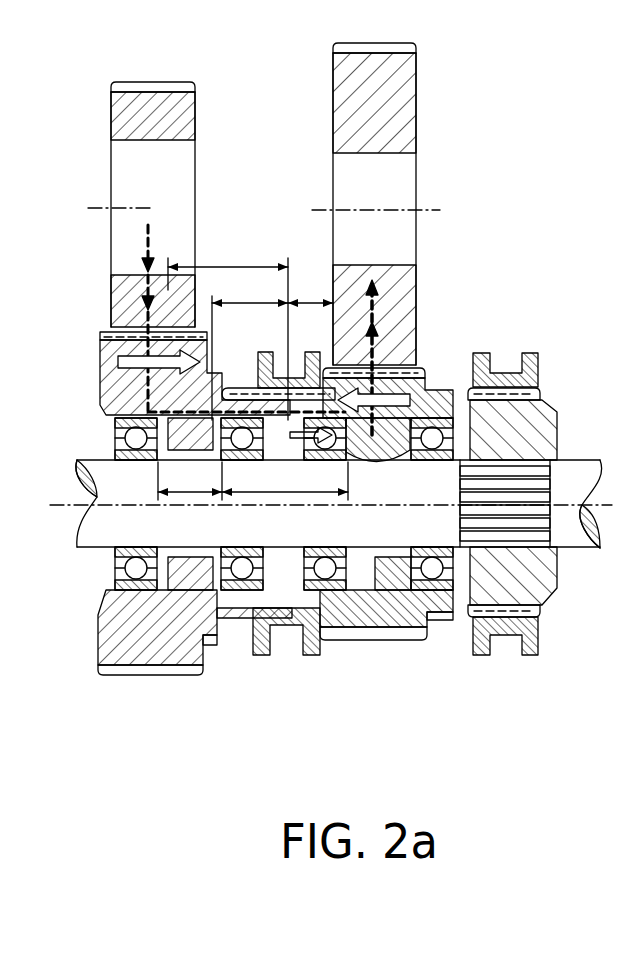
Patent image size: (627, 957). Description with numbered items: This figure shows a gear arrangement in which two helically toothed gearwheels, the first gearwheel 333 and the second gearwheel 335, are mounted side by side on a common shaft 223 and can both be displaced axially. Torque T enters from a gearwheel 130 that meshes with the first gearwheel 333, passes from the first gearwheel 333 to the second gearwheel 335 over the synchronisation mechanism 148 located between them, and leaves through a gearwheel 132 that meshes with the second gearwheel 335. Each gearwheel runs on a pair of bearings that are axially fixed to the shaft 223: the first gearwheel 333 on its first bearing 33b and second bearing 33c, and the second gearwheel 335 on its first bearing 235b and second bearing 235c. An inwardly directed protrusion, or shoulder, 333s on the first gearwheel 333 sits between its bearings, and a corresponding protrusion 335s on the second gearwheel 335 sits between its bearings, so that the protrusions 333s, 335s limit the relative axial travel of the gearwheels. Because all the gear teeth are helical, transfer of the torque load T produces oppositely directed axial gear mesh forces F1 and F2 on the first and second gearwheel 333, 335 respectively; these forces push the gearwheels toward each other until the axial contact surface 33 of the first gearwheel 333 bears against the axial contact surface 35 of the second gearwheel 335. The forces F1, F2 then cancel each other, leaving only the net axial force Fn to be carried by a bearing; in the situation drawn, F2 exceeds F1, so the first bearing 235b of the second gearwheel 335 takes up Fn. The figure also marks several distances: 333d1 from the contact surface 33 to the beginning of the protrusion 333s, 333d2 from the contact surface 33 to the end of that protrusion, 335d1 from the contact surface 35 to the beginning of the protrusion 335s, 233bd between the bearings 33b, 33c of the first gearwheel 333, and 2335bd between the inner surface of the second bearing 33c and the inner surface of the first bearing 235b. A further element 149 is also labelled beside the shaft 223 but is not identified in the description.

The gearwheel 130 is at (137, 193).
The gearwheel 132 is at (410, 195).
The torque load T is at (140, 258).
The axial gear mesh force F1 is at (128, 386).
The axial gear mesh force F2 is at (360, 395).
The net axial force Fn is at (348, 410).
The distance 335d1 is at (312, 303).
The distance 333d2 is at (228, 330).
The distance 333d1 is at (250, 348).
The distance 2335bd is at (285, 481).
The distance 233bd is at (212, 496).
The first bearing 33b is at (113, 552).
The first gearwheel 333 is at (108, 640).
The protrusion 333s is at (170, 606).
The second bearing 33c is at (192, 608).
The axial contact surface 33 is at (250, 612).
The synchronisation mechanism 148 is at (320, 652).
The axial contact surface 35 is at (326, 600).
The second gearwheel 335 is at (372, 606).
The first bearing 235b is at (396, 612).
The protrusion 335s is at (410, 612).
The second bearing 235c is at (434, 630).
The shaft 223 is at (567, 548).
The splined hub 149 is at (537, 658).